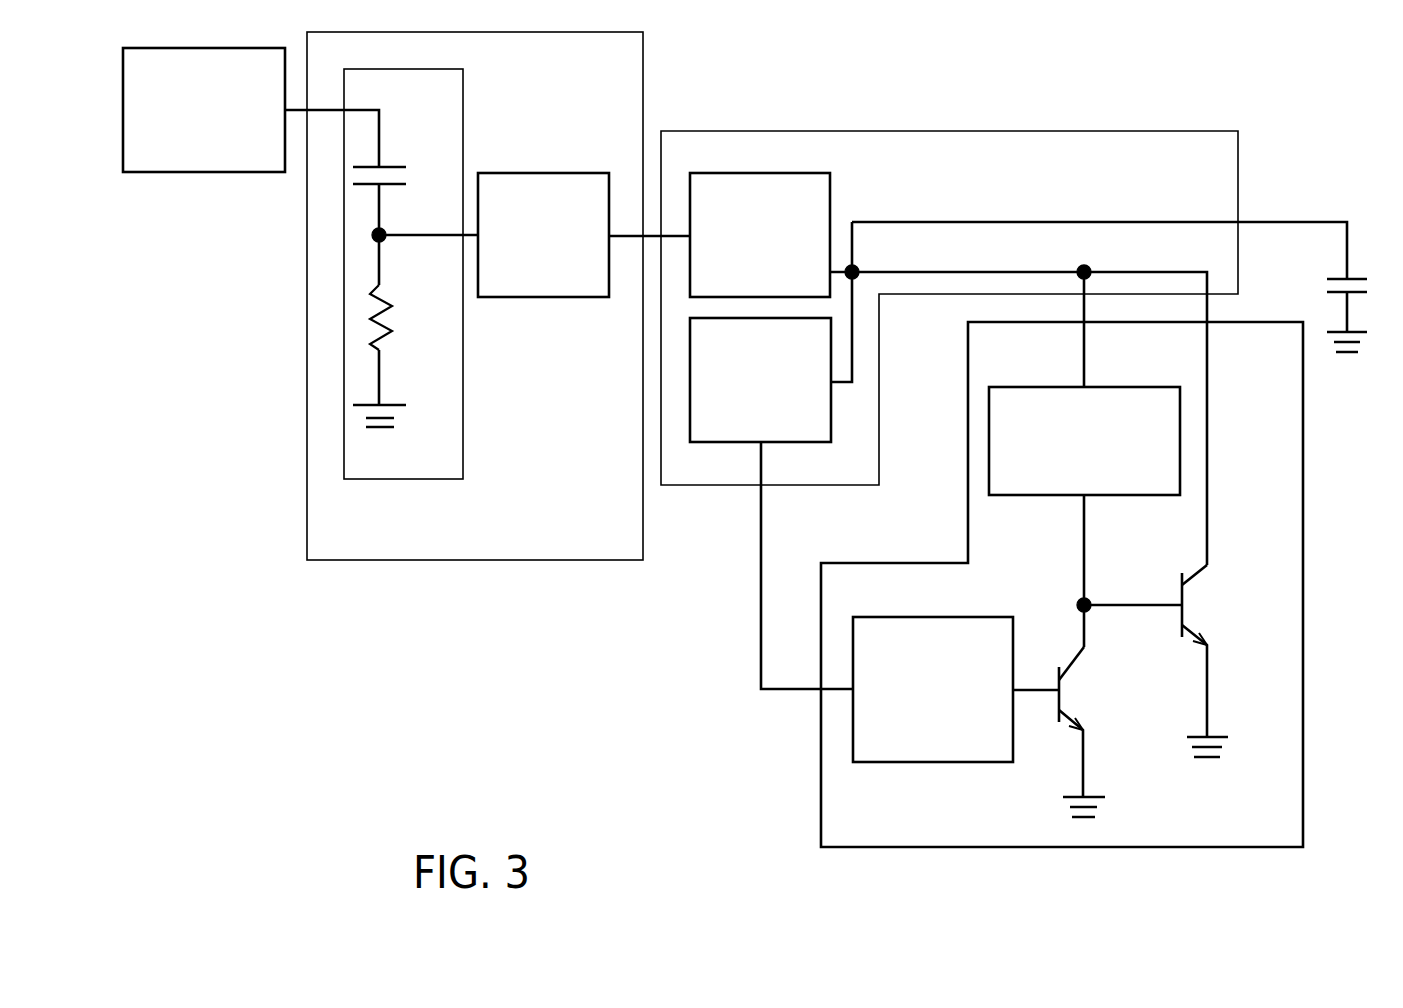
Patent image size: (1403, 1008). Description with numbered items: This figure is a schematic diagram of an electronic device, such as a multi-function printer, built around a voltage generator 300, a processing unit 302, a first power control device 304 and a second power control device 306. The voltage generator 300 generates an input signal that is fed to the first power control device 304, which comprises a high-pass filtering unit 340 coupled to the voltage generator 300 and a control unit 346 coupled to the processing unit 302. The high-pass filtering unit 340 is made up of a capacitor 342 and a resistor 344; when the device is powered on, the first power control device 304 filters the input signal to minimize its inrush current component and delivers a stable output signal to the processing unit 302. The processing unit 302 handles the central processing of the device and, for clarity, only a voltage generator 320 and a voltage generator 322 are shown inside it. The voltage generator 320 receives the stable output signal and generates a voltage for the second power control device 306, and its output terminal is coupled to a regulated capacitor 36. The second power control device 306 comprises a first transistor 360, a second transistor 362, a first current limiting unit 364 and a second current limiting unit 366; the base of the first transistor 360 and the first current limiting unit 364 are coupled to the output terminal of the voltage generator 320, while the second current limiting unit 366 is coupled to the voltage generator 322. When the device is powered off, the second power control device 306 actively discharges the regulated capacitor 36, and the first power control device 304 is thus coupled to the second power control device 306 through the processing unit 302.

The voltage generator 300 is at (208, 172).
The processing unit 302 is at (951, 130).
The first power control device 304 is at (472, 560).
The second power control device 306 is at (1304, 618).
The voltage generator 320 is at (831, 203).
The voltage generator 322 is at (832, 414).
The high-pass filtering unit 340 is at (377, 479).
The capacitor 342 is at (400, 165).
The resistor 344 is at (388, 302).
The control unit 346 is at (541, 297).
The first transistor 360 is at (1200, 620).
The second transistor 362 is at (1085, 697).
The first current limiting unit 364 is at (988, 440).
The second current limiting unit 366 is at (930, 762).
The regulated capacitor 36 is at (1363, 278).